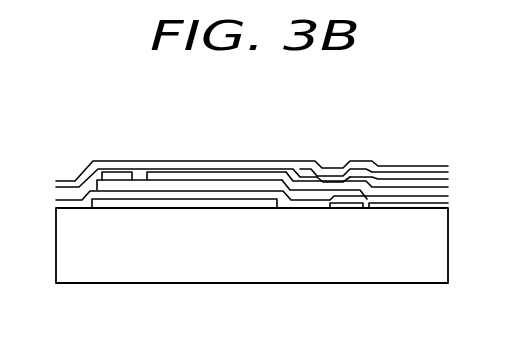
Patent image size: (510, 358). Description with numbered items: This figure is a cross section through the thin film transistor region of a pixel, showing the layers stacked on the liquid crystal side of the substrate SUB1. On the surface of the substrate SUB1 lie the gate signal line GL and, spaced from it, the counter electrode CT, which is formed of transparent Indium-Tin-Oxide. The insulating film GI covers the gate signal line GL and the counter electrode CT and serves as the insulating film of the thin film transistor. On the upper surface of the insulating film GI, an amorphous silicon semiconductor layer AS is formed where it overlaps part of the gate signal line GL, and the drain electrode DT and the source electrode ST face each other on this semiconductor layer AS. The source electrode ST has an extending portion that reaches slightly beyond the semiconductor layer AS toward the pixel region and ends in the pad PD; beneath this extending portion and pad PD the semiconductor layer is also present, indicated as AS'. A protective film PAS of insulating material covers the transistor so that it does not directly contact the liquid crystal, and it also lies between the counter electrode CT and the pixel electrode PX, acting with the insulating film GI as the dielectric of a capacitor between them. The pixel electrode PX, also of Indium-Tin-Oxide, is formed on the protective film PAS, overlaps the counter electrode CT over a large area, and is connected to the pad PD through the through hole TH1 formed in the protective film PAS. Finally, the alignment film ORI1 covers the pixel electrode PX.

The substrate SUB1 is at (90, 268).
The gate signal line GL is at (213, 204).
The counter electrode CT is at (420, 205).
The insulating film GI is at (145, 198).
The amorphous semiconductor layer AS is at (189, 151).
The semiconductor layer AS' is at (321, 148).
The drain electrode DT is at (118, 176).
The source electrode ST is at (190, 176).
The pad PD is at (360, 170).
The protective film PAS is at (80, 172).
The through hole TH1 is at (318, 164).
The pixel electrode PX is at (422, 165).
The alignment film ORI1 is at (238, 158).